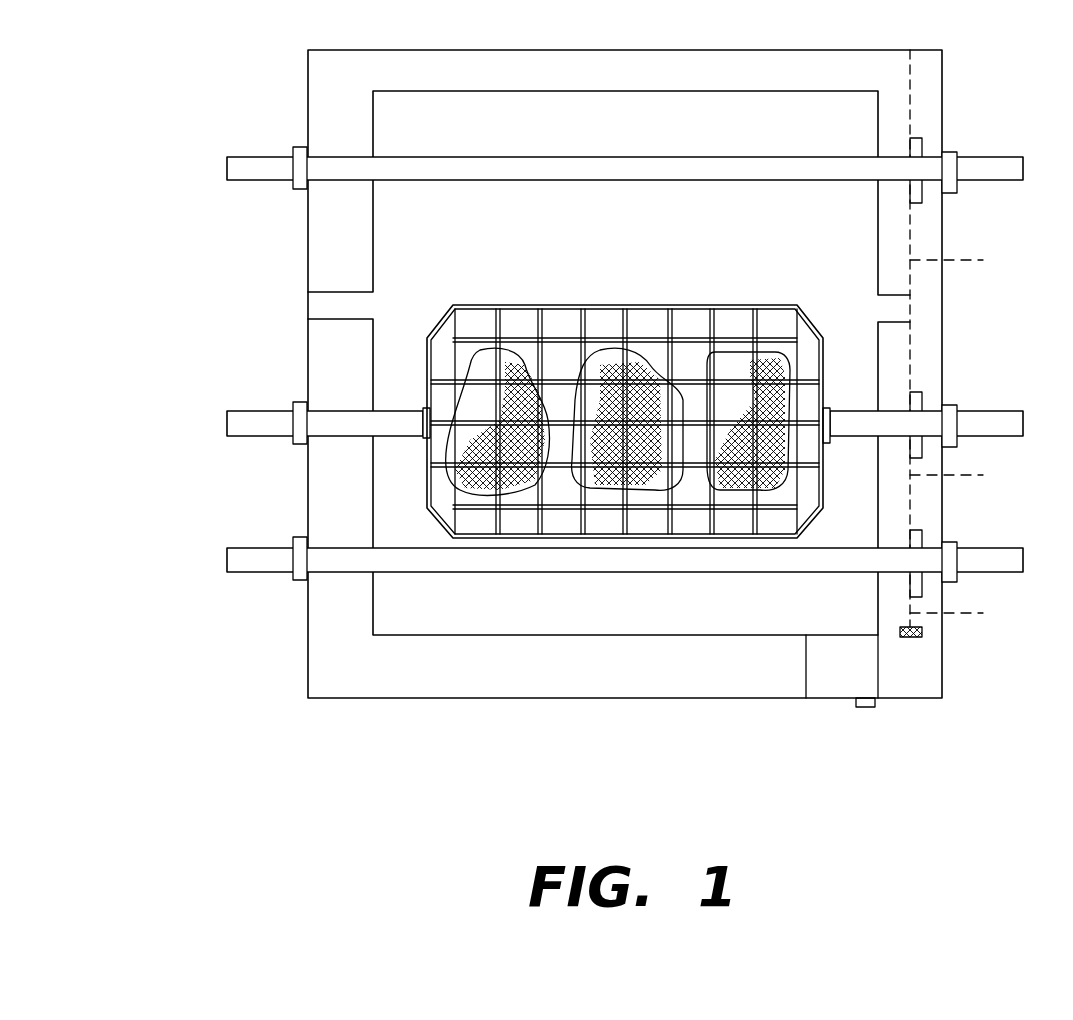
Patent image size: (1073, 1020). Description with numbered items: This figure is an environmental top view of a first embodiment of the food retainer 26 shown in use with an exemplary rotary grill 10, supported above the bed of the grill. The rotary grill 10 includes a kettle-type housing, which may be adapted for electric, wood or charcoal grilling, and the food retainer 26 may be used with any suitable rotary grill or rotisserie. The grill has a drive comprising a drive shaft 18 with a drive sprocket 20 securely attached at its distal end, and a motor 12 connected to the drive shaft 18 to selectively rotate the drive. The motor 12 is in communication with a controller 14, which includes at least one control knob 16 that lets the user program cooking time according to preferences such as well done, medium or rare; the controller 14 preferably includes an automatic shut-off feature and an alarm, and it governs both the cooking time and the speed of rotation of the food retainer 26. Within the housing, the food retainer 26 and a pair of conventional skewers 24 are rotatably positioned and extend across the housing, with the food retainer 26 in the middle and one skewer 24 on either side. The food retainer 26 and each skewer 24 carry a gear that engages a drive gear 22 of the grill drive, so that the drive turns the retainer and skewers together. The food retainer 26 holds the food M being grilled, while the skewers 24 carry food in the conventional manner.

The rotary grill 10 is at (297, 743).
The motor 12 is at (942, 683).
The controller 14 is at (822, 684).
The control knob 16 is at (868, 707).
The drive shaft 18 is at (983, 260).
The drive sprocket 20 is at (922, 631).
The drive gear 22 is at (922, 143).
The skewers 24 is at (449, 190).
The food retainer 26 is at (414, 293).
The material M is at (518, 370).